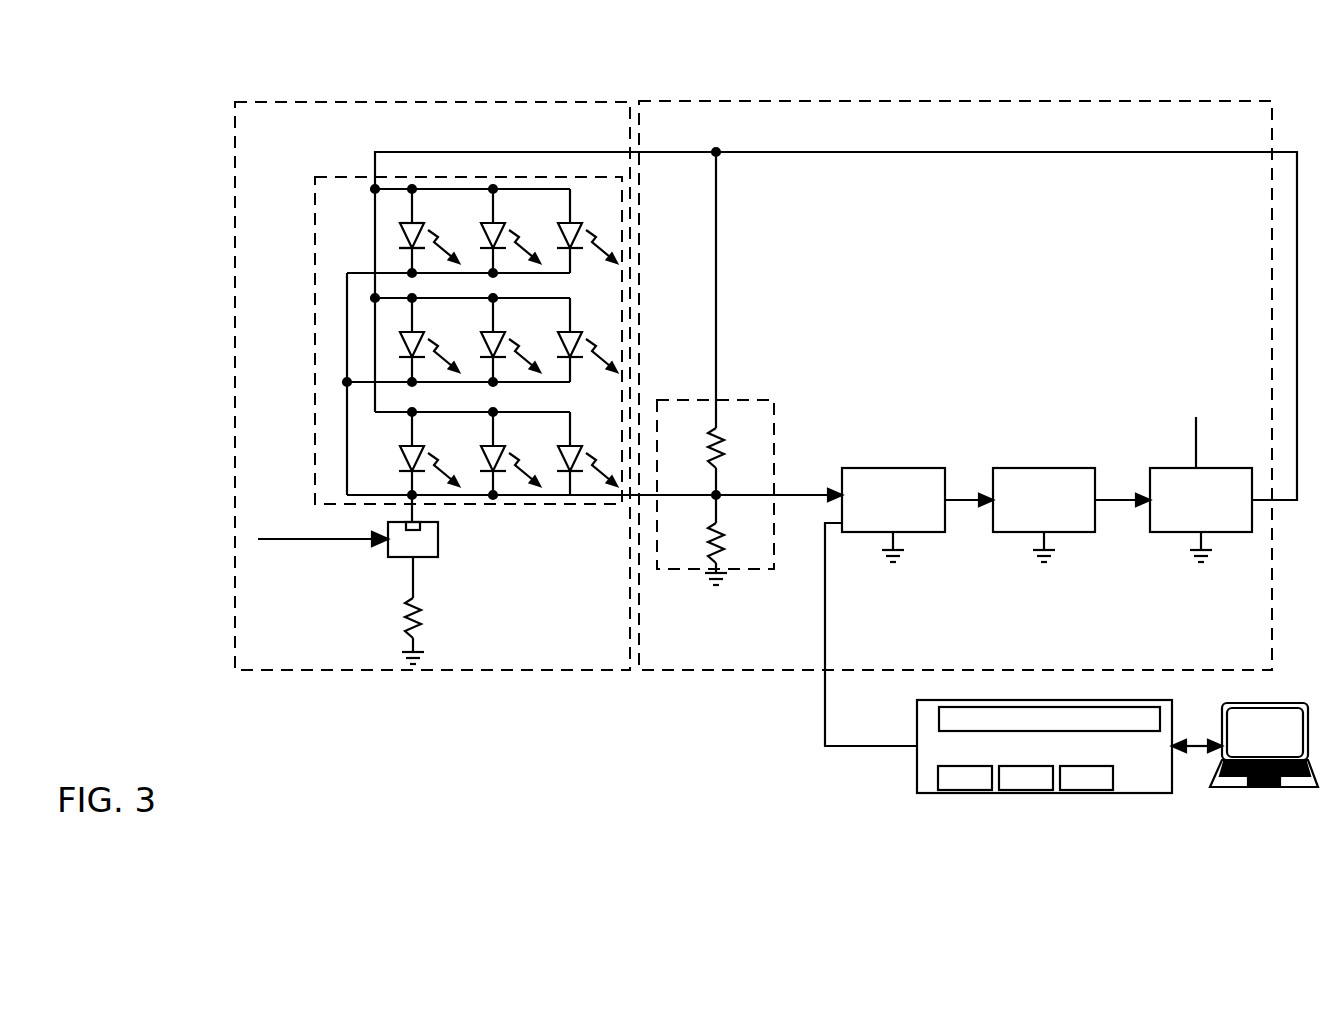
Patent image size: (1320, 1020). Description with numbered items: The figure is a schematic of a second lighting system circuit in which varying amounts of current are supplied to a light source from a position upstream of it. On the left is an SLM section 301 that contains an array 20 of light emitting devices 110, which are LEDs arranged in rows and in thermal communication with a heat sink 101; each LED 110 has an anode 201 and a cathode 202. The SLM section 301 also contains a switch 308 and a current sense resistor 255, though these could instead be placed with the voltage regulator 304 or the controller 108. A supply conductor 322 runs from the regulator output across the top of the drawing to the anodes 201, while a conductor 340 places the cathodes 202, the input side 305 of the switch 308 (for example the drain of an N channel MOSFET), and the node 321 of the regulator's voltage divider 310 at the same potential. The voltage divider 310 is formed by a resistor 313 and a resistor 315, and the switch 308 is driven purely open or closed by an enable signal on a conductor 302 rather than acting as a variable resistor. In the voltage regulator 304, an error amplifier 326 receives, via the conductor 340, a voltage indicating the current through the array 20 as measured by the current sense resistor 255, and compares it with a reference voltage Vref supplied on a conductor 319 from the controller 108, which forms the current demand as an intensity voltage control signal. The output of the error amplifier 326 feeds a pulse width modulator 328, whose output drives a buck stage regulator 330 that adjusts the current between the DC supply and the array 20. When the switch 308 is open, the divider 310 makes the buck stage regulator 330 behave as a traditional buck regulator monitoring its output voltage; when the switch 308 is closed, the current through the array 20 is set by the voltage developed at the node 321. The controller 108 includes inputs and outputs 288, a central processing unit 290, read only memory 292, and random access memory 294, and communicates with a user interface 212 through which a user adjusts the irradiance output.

The SLM section 301 is at (330, 101).
The voltage regulator 304 is at (940, 101).
The array 20 is at (331, 166).
The supply line 322 is at (538, 152).
The heat sink 101 is at (315, 400).
The light emitting devices 110 is at (424, 229).
The anode 201 is at (410, 225).
The cathode 202 is at (410, 249).
The conductor 340 is at (620, 495).
The switch 308 is at (418, 526).
The input side 305 is at (410, 525).
The conductor 302 is at (290, 541).
The current sense resistor 255 is at (422, 620).
The voltage divider 310 is at (711, 368).
The resistor 313 is at (702, 448).
The resistor 315 is at (702, 545).
The node 321 is at (717, 494).
The error amplifier 326 is at (885, 468).
The pulse width modulator 328 is at (1047, 446).
The buck stage regulator 330 is at (1170, 446).
The conductor 319 is at (835, 746).
The controller 108 is at (1044, 746).
The inputs and outputs 288 is at (1049, 719).
The central processing unit 290 is at (965, 778).
The read only memory 292 is at (1026, 778).
The random access memory 294 is at (1086, 778).
The user interface 212 is at (1245, 745).